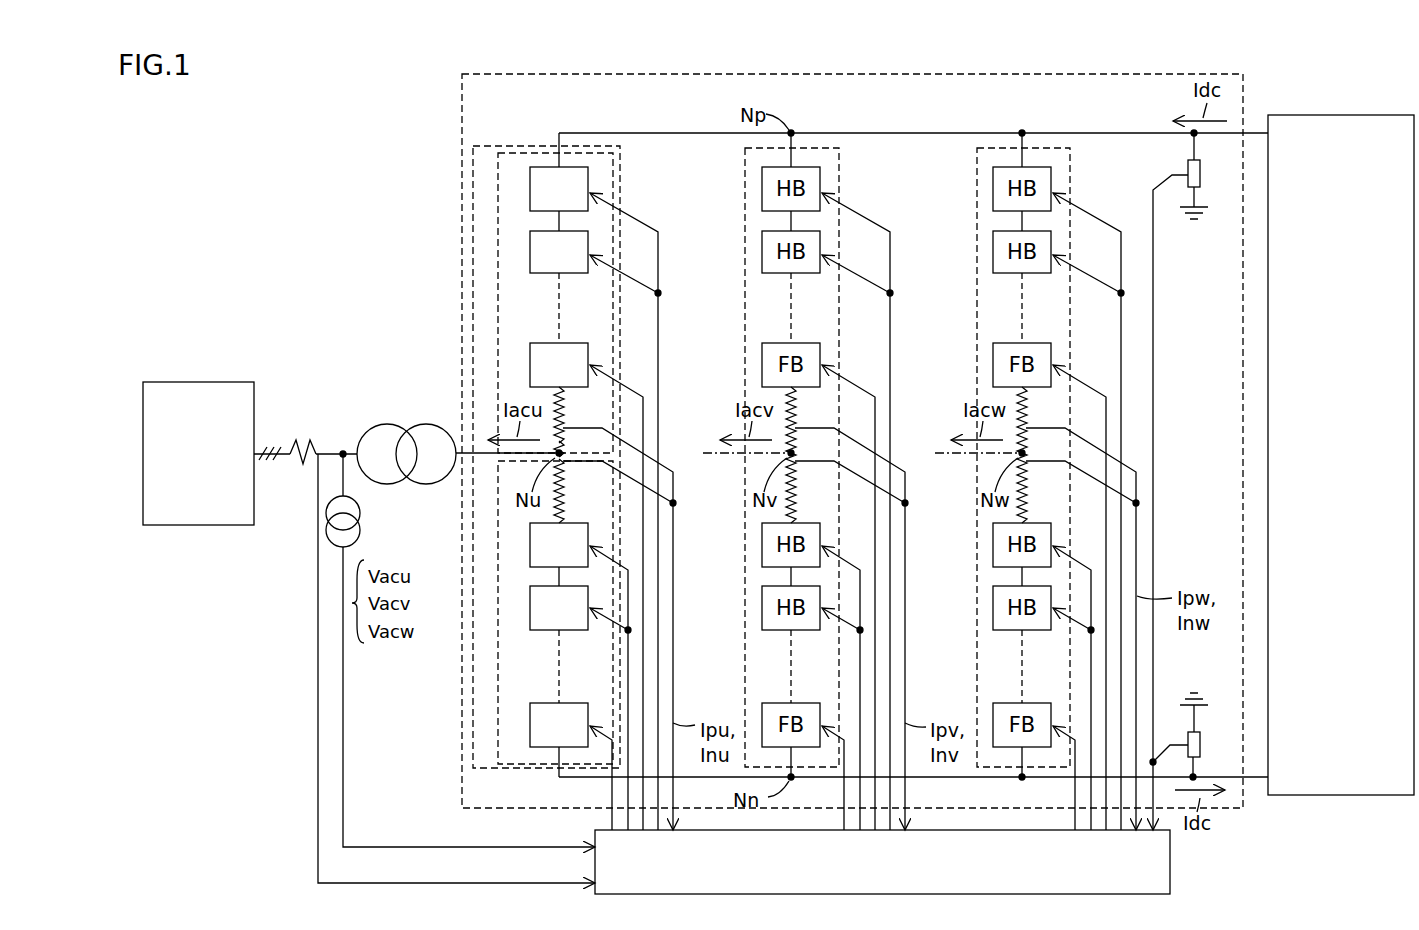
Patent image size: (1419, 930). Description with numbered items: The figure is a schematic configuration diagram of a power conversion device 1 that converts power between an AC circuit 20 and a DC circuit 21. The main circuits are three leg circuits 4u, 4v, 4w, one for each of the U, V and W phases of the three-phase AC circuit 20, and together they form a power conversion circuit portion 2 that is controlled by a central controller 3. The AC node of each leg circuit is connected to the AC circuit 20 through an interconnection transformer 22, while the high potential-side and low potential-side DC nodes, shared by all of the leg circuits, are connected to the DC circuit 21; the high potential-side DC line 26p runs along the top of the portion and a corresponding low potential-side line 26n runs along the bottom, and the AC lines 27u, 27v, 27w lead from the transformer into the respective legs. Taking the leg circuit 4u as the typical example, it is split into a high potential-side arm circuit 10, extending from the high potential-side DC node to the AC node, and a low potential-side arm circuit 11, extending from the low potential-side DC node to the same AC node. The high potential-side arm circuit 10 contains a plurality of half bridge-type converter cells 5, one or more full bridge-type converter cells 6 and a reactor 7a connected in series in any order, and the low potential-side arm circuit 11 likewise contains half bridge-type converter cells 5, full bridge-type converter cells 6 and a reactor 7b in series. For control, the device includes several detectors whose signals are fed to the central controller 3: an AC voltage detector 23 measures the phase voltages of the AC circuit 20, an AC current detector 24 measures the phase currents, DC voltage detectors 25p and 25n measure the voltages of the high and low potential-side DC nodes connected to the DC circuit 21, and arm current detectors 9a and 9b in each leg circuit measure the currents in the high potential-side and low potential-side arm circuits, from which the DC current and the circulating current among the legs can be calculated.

The power conversion device 1 is at (412, 213).
The power conversion circuit portion 2 is at (462, 115).
The central controller 3 is at (1170, 862).
The leg circuit 4u is at (503, 142).
The leg circuit 4v is at (823, 142).
The leg circuit 4w is at (1053, 142).
The half bridge-type converter cell 5 is at (530, 189).
The full bridge-type converter cell 6 is at (530, 367).
The reactor 7a is at (566, 411).
The reactor 7b is at (566, 500).
The arm current detector 9a is at (567, 441).
The arm current detector 9b is at (567, 462).
The high potential-side arm circuit 10 is at (497, 293).
The low potential-side arm circuit 11 is at (497, 663).
The AC circuit 20 is at (198, 381).
The DC circuit 21 is at (1340, 795).
The interconnection transformer 22 is at (387, 424).
The AC voltage detector 23 is at (360, 513).
The AC current detector 24 is at (303, 445).
The DC voltage detector 25p is at (1200, 180).
The DC voltage detector 25n is at (1200, 752).
The high potential-side DC line 26p is at (933, 133).
The negative-side DC terminal 26n is at (930, 779).
The AC input terminal (u phase) 27u is at (490, 457).
The AC input terminal (v phase) 27v is at (760, 457).
The AC input terminal (w phase) 27w is at (991, 457).